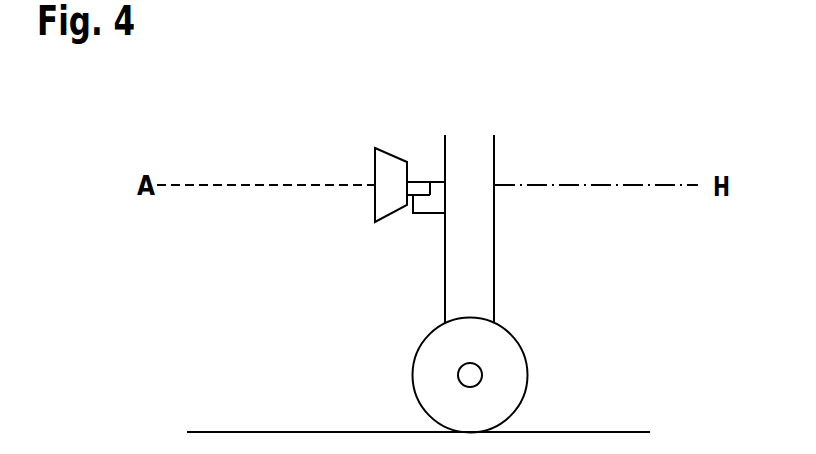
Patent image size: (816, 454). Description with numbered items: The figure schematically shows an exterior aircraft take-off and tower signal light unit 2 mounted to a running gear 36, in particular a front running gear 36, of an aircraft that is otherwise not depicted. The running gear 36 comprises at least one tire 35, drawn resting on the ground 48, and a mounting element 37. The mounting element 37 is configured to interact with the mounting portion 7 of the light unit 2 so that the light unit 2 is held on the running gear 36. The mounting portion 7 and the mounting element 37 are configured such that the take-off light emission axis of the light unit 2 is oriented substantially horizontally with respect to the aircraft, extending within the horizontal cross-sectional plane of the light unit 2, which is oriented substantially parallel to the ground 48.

The exterior aircraft take-off and tower signal light unit 2 is at (391, 148).
The mounting portion 7 is at (422, 188).
The tire 35 is at (497, 357).
The running gear 36 is at (507, 242).
The mounting element 37 is at (428, 207).
The ground 48 is at (286, 431).